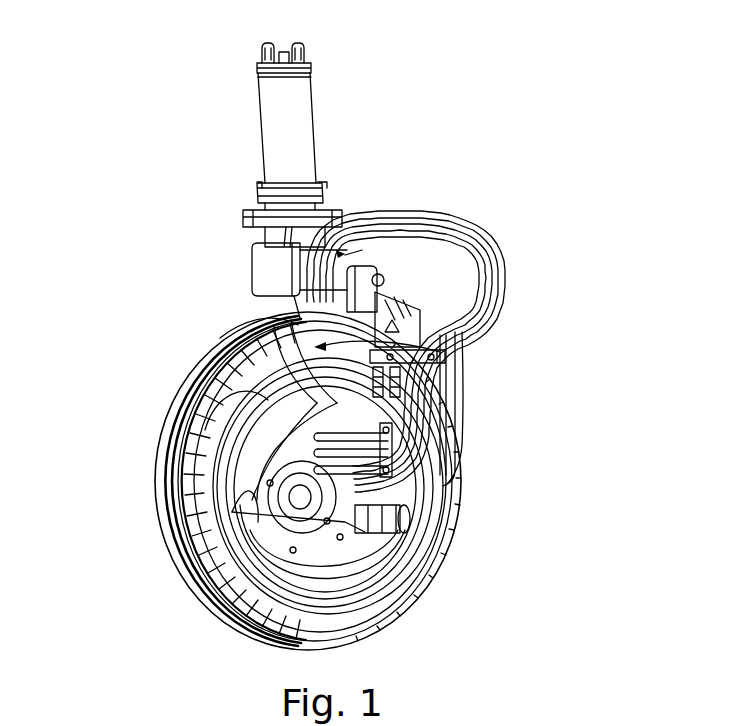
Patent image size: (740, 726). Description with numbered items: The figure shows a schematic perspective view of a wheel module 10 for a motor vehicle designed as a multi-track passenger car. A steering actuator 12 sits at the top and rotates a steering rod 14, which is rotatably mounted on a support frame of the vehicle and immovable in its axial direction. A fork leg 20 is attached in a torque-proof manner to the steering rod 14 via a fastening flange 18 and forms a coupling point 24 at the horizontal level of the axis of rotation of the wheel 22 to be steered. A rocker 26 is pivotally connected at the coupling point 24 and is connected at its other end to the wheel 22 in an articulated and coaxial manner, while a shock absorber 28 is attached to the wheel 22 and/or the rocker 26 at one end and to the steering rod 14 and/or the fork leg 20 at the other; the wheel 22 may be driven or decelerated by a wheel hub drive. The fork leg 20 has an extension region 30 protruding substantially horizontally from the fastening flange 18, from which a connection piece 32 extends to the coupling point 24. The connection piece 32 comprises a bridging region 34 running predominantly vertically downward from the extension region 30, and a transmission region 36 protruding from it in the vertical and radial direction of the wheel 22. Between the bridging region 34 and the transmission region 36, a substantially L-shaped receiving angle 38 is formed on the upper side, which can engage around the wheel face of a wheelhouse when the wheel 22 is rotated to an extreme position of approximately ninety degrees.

The wheel module 10 is at (120, 115).
The steering actuator 12 is at (300, 92).
The steering rod 14 is at (336, 213).
The fastening flange 18 is at (262, 226).
The fork leg 20 is at (443, 352).
The wheel 22 is at (158, 490).
The coupling point 24 is at (215, 605).
The rocker 26 is at (335, 560).
The shock absorber 28 is at (422, 403).
The extension region 30 is at (270, 270).
The connection piece 32 is at (112, 336).
The bridging region 34 is at (298, 318).
The transmission region 36 is at (267, 398).
The receiving angle 38 is at (290, 305).